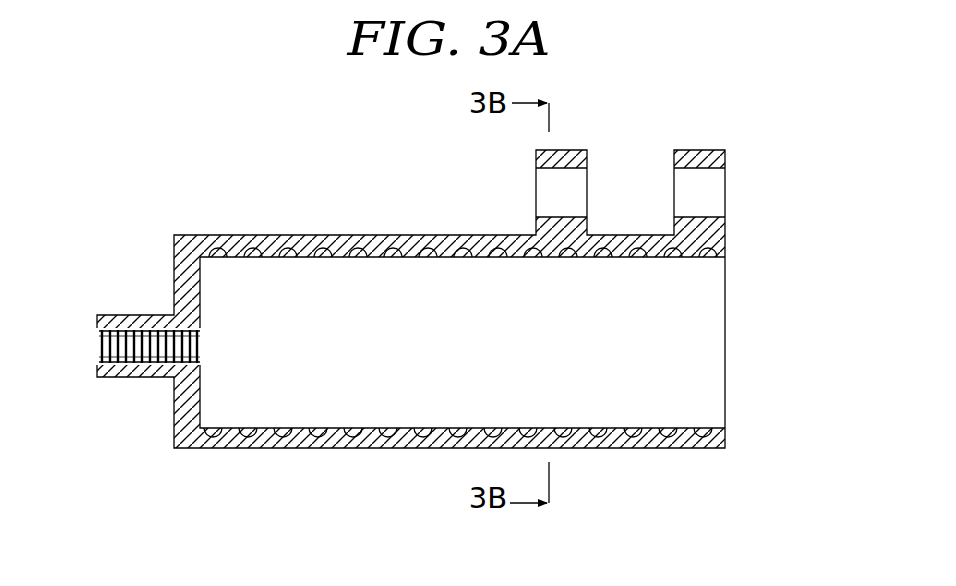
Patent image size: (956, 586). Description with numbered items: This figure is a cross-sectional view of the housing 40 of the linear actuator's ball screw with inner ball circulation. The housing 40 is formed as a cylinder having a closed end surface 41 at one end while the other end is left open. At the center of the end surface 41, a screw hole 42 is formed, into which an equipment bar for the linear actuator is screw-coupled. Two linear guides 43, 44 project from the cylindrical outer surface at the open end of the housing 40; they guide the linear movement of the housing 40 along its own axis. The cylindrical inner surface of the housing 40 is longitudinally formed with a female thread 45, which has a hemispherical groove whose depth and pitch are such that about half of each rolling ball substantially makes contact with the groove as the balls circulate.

The housing 40 is at (258, 226).
The end surface 41 is at (187, 284).
The screw hole 42 is at (137, 378).
The linear guide 43 is at (588, 160).
The linear guide 44 is at (726, 160).
The female thread 45 is at (313, 256).